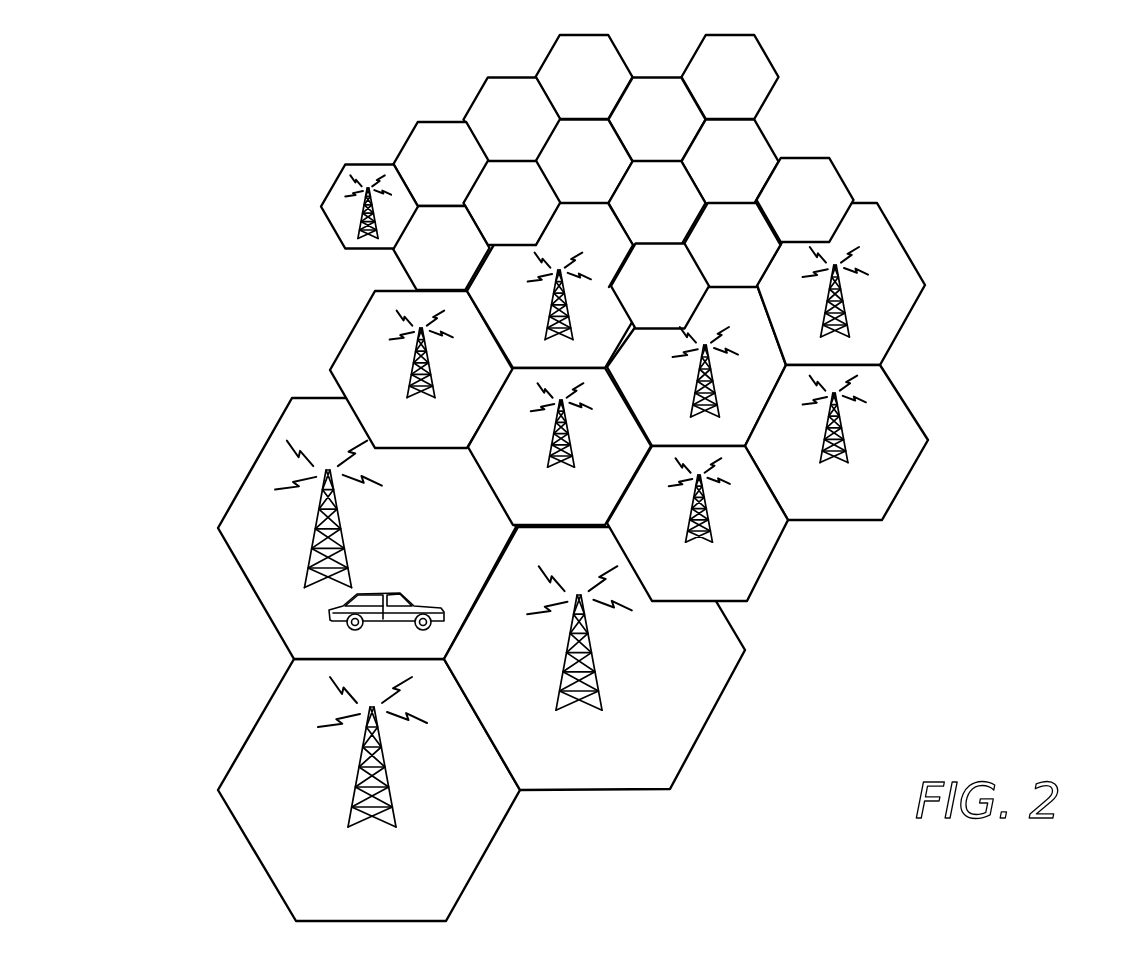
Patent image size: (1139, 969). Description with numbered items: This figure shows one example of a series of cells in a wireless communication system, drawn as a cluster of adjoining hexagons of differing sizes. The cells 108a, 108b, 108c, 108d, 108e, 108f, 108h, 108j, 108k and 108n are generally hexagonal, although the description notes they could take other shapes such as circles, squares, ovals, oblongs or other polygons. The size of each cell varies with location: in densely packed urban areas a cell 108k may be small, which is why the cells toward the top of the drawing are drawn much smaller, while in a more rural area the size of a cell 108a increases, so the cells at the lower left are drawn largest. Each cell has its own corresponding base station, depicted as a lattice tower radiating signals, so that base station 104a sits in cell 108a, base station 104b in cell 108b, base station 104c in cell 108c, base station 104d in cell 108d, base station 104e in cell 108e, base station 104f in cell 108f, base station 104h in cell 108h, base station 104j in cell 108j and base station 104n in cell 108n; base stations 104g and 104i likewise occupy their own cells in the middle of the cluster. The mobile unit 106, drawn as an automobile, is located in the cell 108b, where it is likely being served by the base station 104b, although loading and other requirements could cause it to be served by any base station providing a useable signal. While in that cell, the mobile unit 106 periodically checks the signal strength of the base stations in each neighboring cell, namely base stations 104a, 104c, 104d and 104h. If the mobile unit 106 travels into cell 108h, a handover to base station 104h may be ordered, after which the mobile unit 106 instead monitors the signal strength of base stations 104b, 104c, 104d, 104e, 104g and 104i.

The base station 104a is at (353, 790).
The base station 104b is at (342, 512).
The base station 104c is at (410, 372).
The base station 104d is at (595, 660).
The base station 104e is at (687, 523).
The base station 104f is at (830, 433).
The base station 104g is at (550, 326).
The base station 104h is at (552, 442).
The base station 104i is at (690, 423).
The base station 104j is at (820, 337).
The base station 104n is at (360, 213).
The mobile unit 106 is at (383, 587).
The cell 108a is at (268, 702).
The cell 108b is at (250, 470).
The cell 108c is at (351, 330).
The cell 108d is at (702, 730).
The cell 108e is at (762, 572).
The cell 108f is at (905, 405).
The cell 108h is at (484, 472).
The cell 108j is at (895, 230).
The cell 108k is at (797, 155).
The cell 108n is at (363, 164).